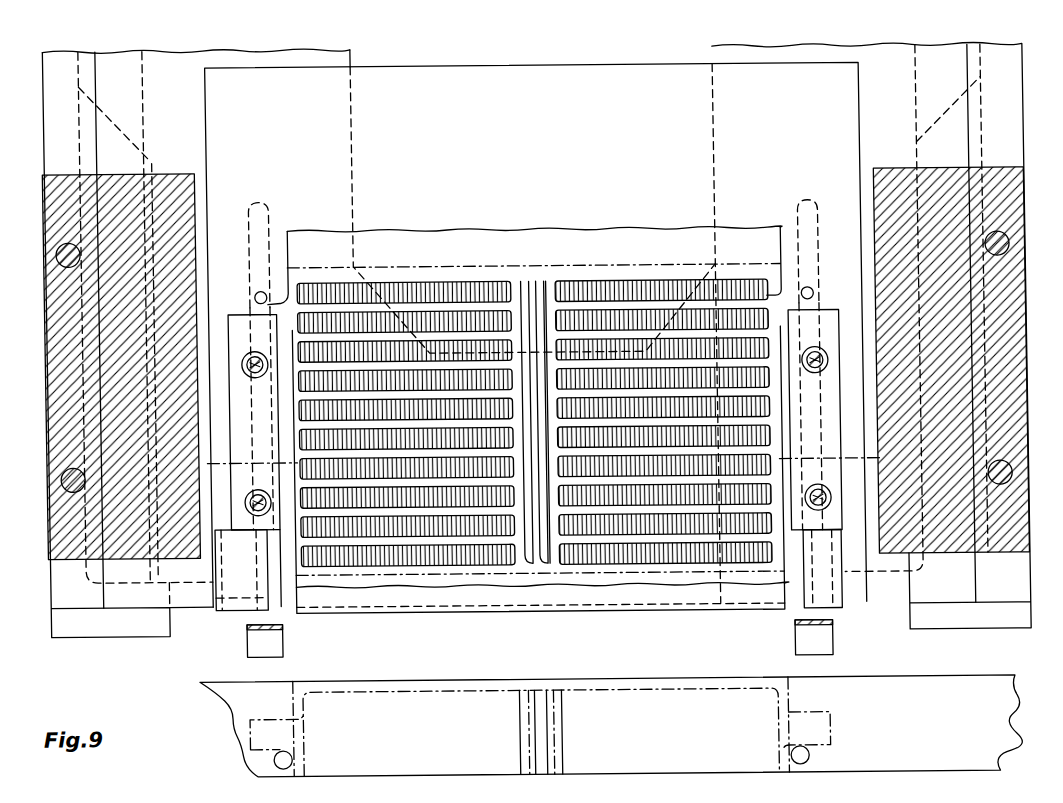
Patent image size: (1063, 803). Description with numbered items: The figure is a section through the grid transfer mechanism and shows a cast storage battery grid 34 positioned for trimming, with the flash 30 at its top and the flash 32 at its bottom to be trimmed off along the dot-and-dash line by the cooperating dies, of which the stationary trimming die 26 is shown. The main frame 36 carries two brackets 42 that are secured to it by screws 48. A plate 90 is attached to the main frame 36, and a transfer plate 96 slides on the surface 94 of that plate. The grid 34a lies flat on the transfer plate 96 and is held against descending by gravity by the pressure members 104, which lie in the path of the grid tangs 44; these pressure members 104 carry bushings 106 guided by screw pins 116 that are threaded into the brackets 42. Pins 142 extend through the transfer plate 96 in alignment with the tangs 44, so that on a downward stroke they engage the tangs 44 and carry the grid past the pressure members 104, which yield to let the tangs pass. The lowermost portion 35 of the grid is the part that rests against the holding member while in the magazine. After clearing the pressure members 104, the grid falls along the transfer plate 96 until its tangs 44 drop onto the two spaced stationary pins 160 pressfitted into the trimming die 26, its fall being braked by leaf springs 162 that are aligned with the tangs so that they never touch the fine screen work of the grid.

The trimming die 26 is at (356, 693).
The flash 30 is at (454, 232).
The flash 32 is at (493, 585).
The storage battery grid 34 is at (717, 712).
The grid 34a is at (627, 326).
The lowermost portion 35 is at (596, 579).
The main frame 36 is at (986, 68).
The brackets 42 is at (169, 212).
The tangs 44 is at (240, 314).
The screws 48 is at (1006, 252).
The plate 90 is at (183, 72).
The surface 94 is at (265, 62).
The transfer plate 96 is at (585, 75).
The pressure members 104 is at (823, 520).
The bushings 106 is at (247, 517).
The screw pins 116 is at (252, 362).
The pins 142 is at (807, 297).
The stationary pins 160 is at (281, 761).
The leaf springs 162 is at (273, 645).